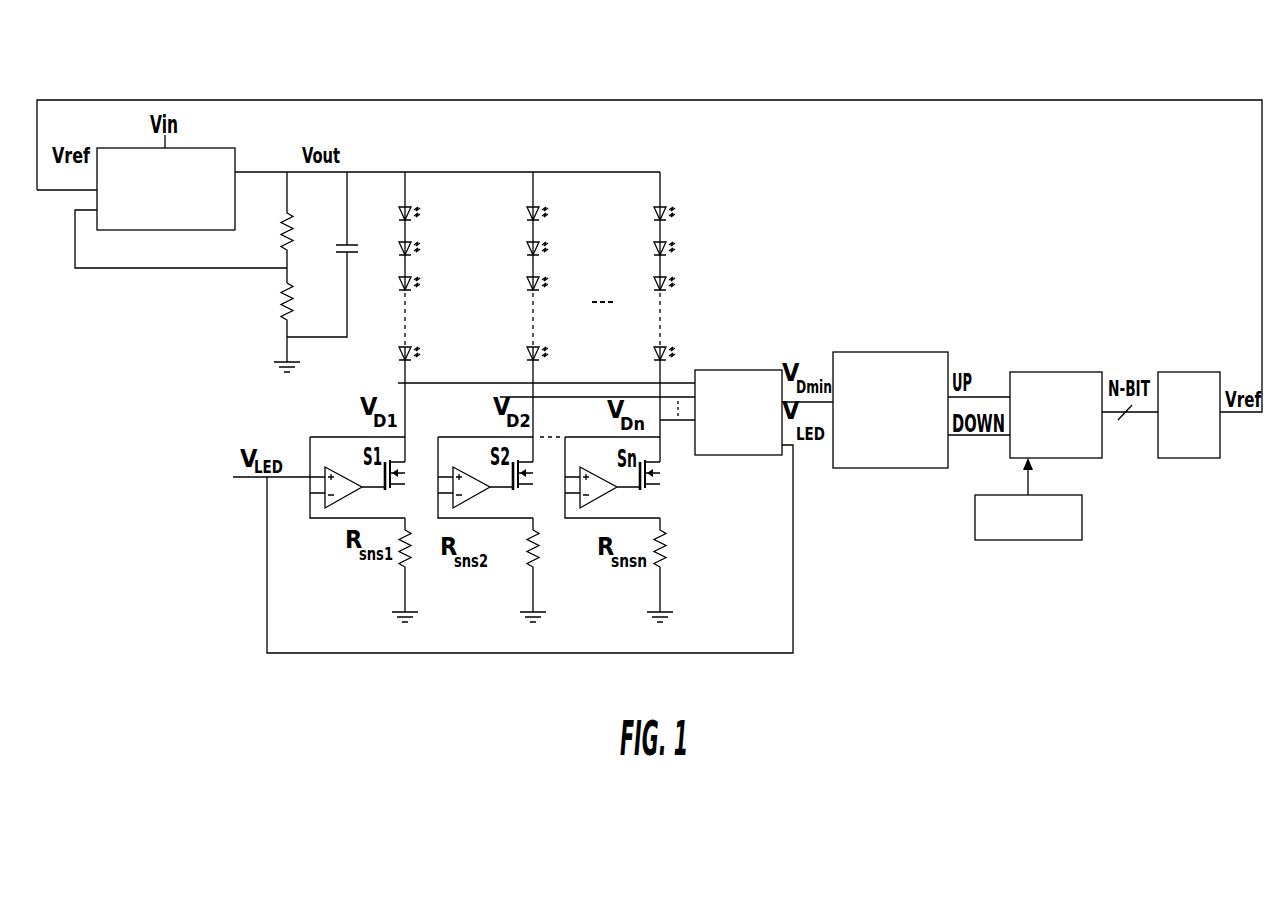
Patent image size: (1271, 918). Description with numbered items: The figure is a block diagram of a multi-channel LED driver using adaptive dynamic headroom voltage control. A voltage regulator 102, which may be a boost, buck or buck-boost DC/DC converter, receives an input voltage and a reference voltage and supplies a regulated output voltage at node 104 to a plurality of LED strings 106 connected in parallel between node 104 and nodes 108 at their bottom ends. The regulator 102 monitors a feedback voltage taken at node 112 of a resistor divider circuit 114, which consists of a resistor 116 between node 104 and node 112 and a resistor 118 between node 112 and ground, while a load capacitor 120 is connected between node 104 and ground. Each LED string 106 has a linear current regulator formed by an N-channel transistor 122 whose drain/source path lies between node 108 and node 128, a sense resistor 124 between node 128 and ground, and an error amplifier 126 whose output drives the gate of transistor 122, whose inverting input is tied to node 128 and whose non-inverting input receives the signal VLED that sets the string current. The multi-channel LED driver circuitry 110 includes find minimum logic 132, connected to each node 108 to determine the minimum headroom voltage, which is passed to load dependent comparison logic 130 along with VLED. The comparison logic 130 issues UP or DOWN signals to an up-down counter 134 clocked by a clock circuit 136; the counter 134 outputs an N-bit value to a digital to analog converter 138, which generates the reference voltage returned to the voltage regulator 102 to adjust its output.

The voltage regulator 102 is at (197, 148).
The output voltage node 104 is at (352, 172).
The LED string 106 is at (445, 258).
The headroom regulation voltage node 108 is at (398, 383).
The multi-channel LED driver circuitry 110 is at (1085, 330).
The feedback node 112 is at (285, 266).
The resistor divider circuit 114 is at (268, 332).
The resistor 116 is at (257, 205).
The resistor 118 is at (278, 318).
The load capacitor 120 is at (355, 255).
The transistor 122 is at (385, 470).
The resistor 124 is at (398, 570).
The error amplifier 126 is at (345, 494).
The node 128 is at (410, 520).
The load dependent comparison logic 130 is at (895, 468).
The find minimum logic 132 is at (725, 370).
The up-down counter 134 is at (1035, 372).
The clock circuit 136 is at (1010, 540).
The digital to analog converter 138 is at (1178, 458).